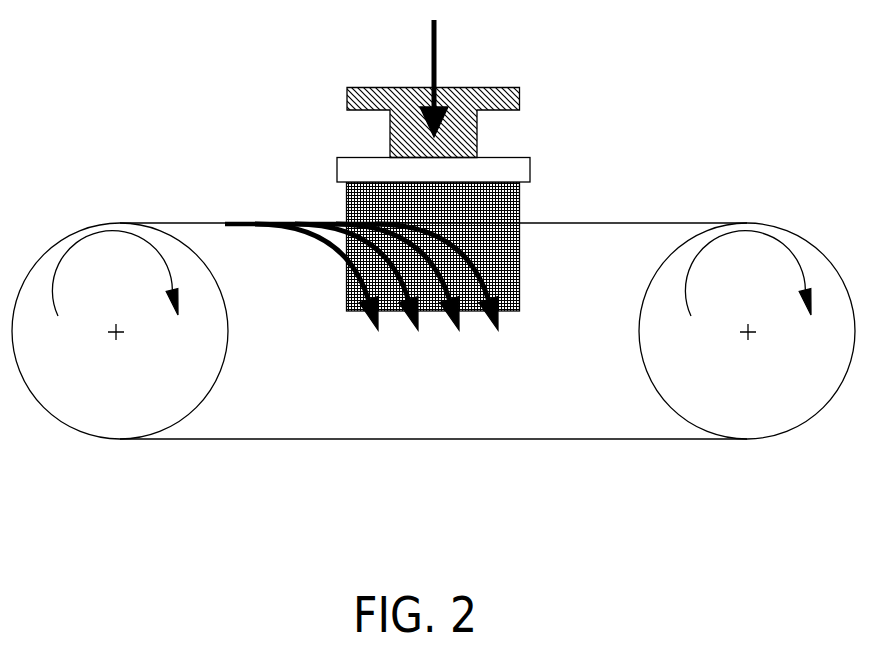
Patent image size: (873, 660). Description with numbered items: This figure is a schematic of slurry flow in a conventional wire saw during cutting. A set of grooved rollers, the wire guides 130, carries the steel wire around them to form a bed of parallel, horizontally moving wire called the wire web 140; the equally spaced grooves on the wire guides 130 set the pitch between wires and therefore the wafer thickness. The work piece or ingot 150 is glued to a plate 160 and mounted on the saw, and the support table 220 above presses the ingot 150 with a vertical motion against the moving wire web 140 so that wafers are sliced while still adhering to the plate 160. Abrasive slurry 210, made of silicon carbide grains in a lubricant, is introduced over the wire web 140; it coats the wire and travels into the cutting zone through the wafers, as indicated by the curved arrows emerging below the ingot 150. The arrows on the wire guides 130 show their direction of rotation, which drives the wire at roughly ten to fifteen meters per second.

The wire guides 130 is at (127, 430).
The wire web 140 is at (448, 440).
The ingot 150 is at (520, 210).
The plate 160 is at (531, 172).
The abrasive slurry 210 is at (333, 255).
The support table 220 is at (520, 103).